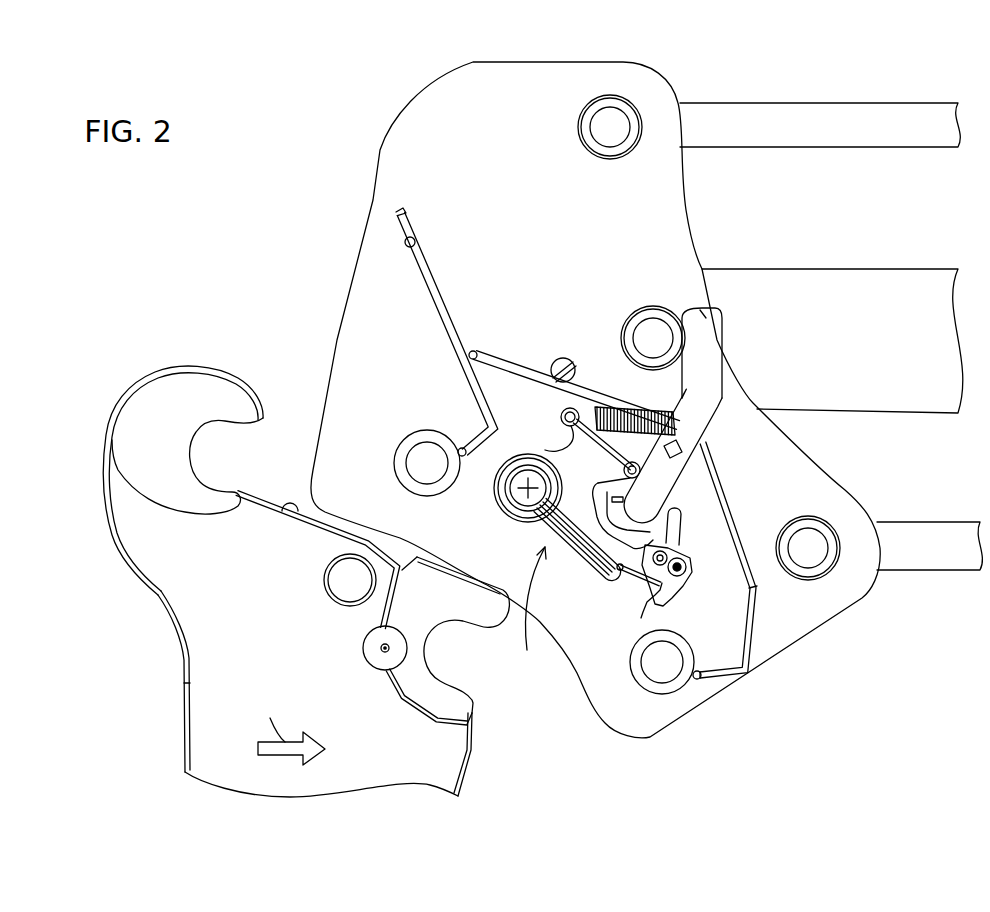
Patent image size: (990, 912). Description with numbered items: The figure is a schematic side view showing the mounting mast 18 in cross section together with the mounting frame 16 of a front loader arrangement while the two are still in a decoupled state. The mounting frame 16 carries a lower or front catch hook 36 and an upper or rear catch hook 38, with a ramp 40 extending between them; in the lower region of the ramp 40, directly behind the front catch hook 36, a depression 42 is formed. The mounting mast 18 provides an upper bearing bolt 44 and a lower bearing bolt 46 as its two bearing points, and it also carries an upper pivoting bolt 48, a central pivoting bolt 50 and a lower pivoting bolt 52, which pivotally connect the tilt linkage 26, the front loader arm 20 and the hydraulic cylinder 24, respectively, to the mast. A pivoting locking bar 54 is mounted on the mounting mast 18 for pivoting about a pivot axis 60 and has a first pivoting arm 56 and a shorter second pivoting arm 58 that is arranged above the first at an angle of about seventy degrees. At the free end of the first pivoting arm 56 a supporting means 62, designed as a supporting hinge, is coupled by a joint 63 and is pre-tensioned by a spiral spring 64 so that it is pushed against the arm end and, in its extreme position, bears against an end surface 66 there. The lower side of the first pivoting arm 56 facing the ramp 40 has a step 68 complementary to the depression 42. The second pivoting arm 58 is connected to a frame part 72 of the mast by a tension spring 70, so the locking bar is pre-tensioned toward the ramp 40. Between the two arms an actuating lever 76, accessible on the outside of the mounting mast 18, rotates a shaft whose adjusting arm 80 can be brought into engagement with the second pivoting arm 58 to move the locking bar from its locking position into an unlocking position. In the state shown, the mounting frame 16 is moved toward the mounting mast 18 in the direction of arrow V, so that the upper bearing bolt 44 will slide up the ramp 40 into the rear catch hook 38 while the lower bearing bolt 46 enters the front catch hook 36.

The mounting frame 16 is at (276, 690).
The mounting mast 18 is at (452, 163).
The front loader arm 20 is at (897, 297).
The hydraulic cylinder 24 is at (927, 557).
The tilt linkage 26 is at (900, 125).
The front catch hook 36 is at (450, 597).
The rear catch hook 38 is at (178, 392).
The ramp 40 is at (283, 505).
The depression 42 is at (372, 552).
The upper bearing bolt 44 is at (423, 453).
The lower bearing bolt 46 is at (662, 668).
The upper pivoting bolt 48 is at (619, 121).
The central pivoting bolt 50 is at (656, 330).
The lower pivoting bolt 52 is at (808, 530).
The pivoting locking bar 54 is at (528, 614).
The first pivoting arm 56 is at (598, 527).
The second pivoting arm 58 is at (573, 447).
The pivot axis 60 is at (525, 497).
The supporting means 62 is at (670, 603).
The joint 63 is at (687, 578).
The spiral spring 64 is at (683, 550).
The end surface 66 is at (657, 587).
The step 68 is at (620, 580).
The tension spring 70 is at (650, 407).
The frame part 72 is at (720, 480).
The actuating lever 76 is at (695, 418).
The adjusting arm 80 is at (617, 482).